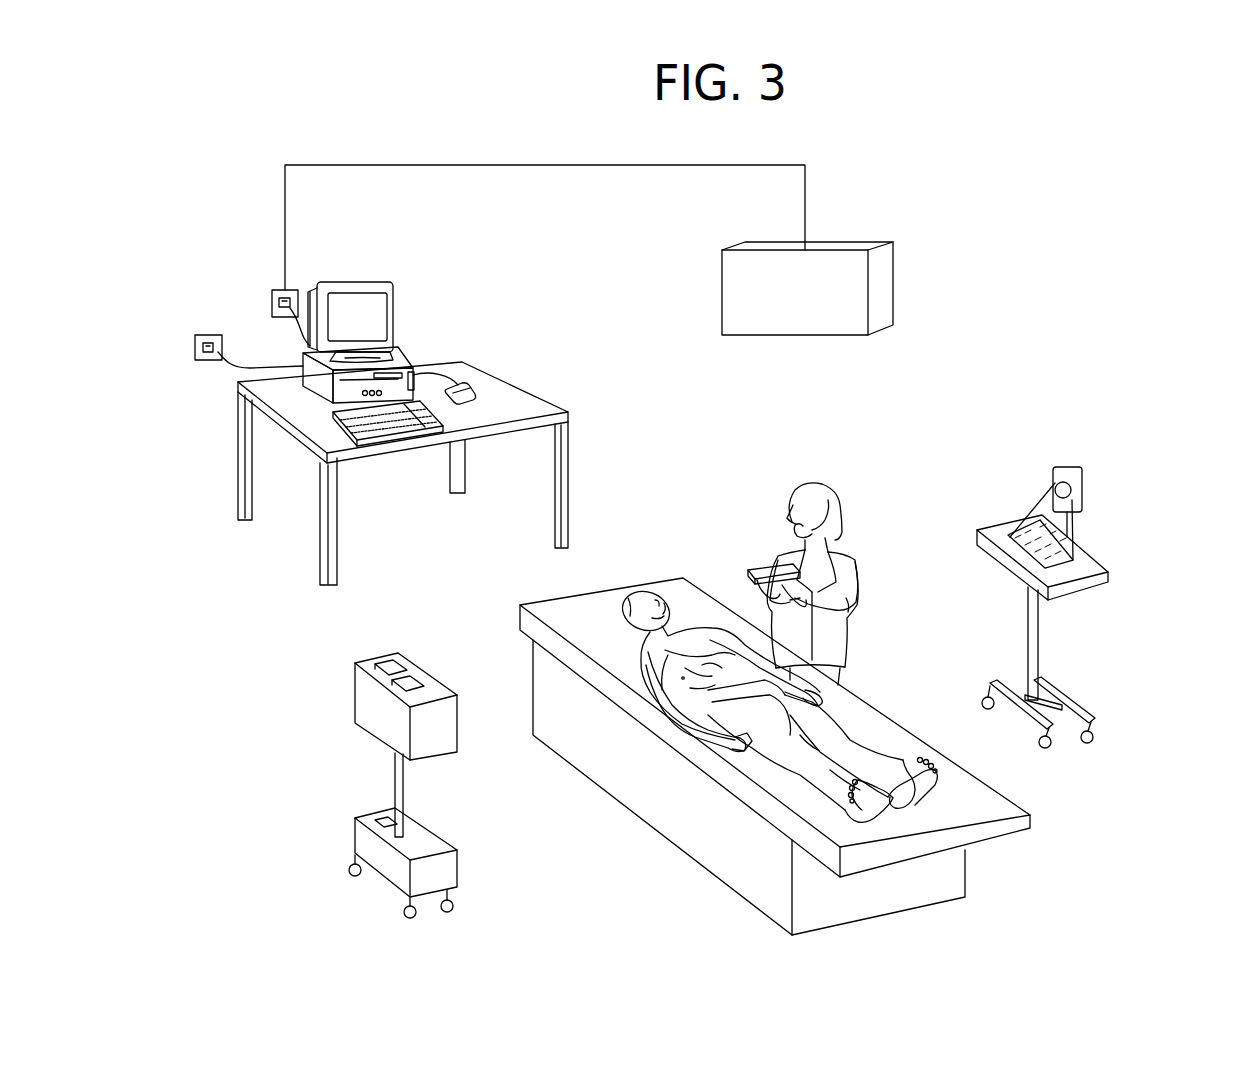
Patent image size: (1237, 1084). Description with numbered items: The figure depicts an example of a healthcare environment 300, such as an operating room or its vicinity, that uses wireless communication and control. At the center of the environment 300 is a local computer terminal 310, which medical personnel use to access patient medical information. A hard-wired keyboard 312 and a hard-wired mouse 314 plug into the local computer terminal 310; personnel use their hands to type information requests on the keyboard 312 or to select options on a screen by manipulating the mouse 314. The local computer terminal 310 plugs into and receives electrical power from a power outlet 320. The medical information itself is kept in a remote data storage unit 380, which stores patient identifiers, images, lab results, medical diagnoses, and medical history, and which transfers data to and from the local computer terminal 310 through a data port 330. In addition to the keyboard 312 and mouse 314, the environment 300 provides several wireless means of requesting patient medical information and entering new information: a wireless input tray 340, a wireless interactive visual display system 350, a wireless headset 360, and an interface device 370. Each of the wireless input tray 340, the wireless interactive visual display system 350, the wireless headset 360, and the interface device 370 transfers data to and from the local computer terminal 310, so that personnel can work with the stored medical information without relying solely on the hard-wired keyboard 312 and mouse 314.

The healthcare environment 300 is at (1098, 779).
The local computer terminal 310 is at (393, 279).
The hard-wired keyboard 312 is at (412, 437).
The hard-wired mouse 314 is at (473, 383).
The power outlet 320 is at (210, 333).
The data port 330 is at (295, 290).
The wireless input tray 340 is at (1095, 556).
The wireless interactive visual display system 350 is at (457, 722).
The wireless headset 360 is at (848, 550).
The interface device 370 is at (755, 565).
The remote data storage unit 380 is at (722, 268).